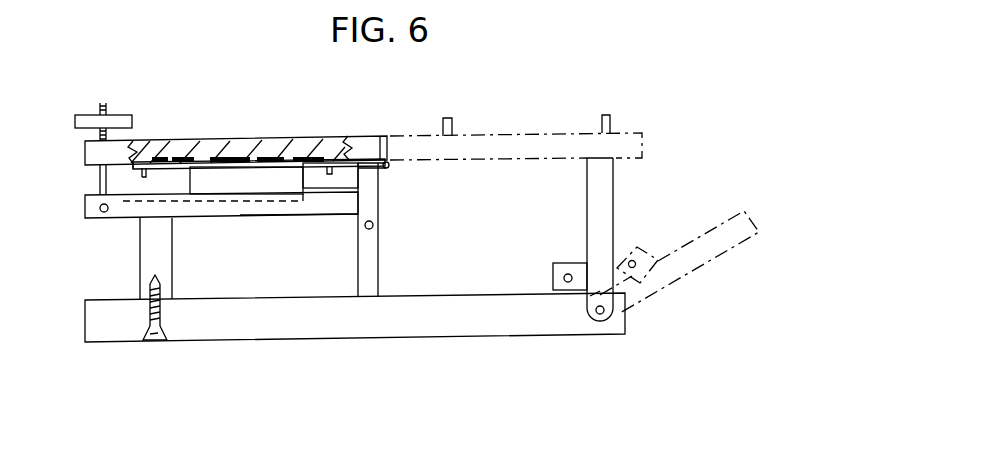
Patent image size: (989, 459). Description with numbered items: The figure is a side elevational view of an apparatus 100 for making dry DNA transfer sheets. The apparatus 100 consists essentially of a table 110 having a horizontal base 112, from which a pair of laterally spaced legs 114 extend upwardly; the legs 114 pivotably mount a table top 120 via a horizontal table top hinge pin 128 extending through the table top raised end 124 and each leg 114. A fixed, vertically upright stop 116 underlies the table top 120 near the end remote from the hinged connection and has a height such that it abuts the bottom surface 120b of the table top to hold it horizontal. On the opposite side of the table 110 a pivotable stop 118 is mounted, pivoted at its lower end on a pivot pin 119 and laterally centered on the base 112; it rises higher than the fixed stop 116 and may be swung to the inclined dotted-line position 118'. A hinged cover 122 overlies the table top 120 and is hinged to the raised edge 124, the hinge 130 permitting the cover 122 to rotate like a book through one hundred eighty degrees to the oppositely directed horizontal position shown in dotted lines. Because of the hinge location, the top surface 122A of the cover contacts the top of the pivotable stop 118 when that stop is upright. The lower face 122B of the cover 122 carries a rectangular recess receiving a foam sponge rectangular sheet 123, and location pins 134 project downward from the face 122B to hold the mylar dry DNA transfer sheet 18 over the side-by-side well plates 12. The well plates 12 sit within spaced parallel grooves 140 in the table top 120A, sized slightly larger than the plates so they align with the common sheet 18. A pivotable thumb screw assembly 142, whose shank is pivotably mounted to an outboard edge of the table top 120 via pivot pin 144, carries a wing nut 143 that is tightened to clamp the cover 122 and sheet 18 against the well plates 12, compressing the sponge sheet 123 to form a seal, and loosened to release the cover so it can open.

The apparatus 100 is at (611, 67).
The table 110 is at (508, 365).
The horizontal base 112 is at (293, 328).
The legs 114 is at (372, 262).
The fixed stop 116 is at (165, 252).
The pivotable stop 118 is at (620, 225).
The inclined position of pivotable stop 118' is at (685, 262).
The pivot pin 119 is at (603, 311).
The table top 120 is at (263, 217).
The table top 120A is at (305, 158).
The bottom surface of table top 120b is at (335, 217).
The hinged cover 122 is at (167, 142).
The top surface of cover 122A is at (250, 140).
The lower face of cover 122B is at (130, 167).
The foam sponge rectangular sheet 123 is at (203, 160).
The table top raised end 124 is at (380, 178).
The table top hinge pin 128 is at (375, 225).
The hinge 130 is at (387, 135).
The dry DNA transfer sheet location pins 134 is at (133, 200).
The grooves 140 is at (160, 200).
The pivotable thumb screw assembly 142 is at (66, 110).
The wing nut 143 is at (88, 117).
The pivot pin 144 is at (100, 212).
The well plates 12 is at (217, 182).
The mylar dry DNA transfer sheet 18 is at (337, 148).